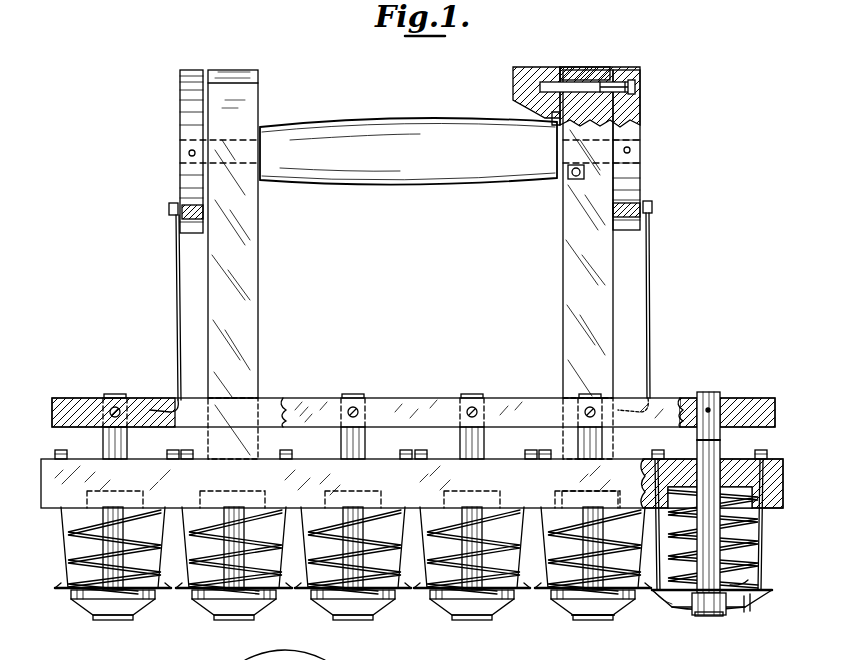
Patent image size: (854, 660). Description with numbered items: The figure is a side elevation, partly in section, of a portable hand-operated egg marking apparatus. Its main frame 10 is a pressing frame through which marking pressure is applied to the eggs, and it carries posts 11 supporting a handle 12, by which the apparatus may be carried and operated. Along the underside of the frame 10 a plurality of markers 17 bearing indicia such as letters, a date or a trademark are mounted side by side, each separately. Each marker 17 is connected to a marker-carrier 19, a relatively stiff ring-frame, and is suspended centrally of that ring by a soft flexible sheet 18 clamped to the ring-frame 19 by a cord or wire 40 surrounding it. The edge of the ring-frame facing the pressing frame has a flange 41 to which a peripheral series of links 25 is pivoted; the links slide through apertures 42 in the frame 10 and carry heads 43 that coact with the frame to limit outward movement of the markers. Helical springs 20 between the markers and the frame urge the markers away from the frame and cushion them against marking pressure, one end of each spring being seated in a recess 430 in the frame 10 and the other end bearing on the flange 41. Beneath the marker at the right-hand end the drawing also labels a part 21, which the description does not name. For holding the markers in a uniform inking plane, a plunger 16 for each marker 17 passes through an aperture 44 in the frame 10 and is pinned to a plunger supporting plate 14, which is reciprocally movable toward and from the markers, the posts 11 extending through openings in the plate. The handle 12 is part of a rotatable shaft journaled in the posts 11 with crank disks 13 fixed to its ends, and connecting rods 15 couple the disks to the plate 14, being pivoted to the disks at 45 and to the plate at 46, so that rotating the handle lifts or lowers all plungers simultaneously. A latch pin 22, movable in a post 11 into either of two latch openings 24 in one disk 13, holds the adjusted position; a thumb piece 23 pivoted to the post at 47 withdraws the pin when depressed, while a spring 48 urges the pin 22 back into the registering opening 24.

The main frame 10 is at (58, 470).
The posts 11 is at (250, 302).
The handle 12 is at (435, 176).
The crank disks 13 is at (192, 128).
The plunger supporting plate 14 is at (750, 400).
The connecting rods 15 is at (177, 310).
The plunger 16 is at (222, 440).
The markers 17 is at (128, 621).
The flexible sheet 18 is at (680, 610).
The marker-carrier 19 is at (752, 604).
The helical springs 20 is at (78, 530).
The foot 21 is at (718, 616).
The latch pin 22 is at (613, 70).
The thumb piece 23 is at (525, 73).
The latch openings 24 is at (637, 88).
The links 25 is at (64, 568).
The cord or wire 40 is at (283, 604).
The flange 41 is at (748, 582).
The apertures 42 is at (786, 463).
The heads 43 is at (67, 455).
The aperture 44 is at (725, 455).
The pivot 45 is at (169, 211).
The pivot 46 is at (180, 407).
The pivot 47 is at (553, 118).
The spring 48 is at (582, 66).
The recesses 430 is at (683, 492).